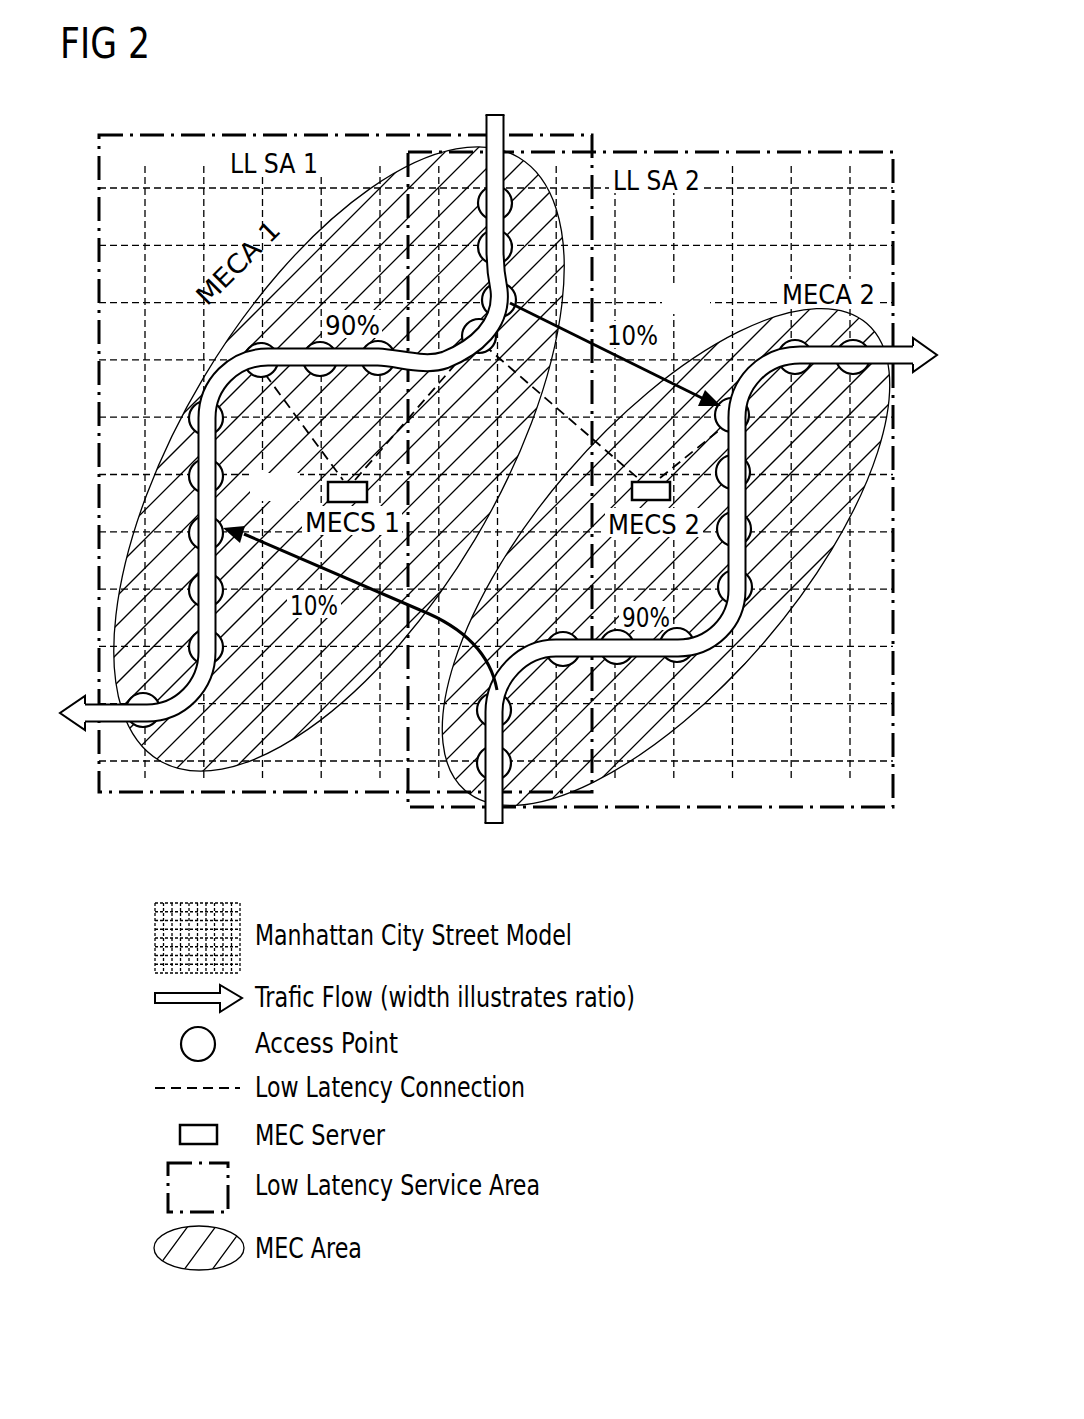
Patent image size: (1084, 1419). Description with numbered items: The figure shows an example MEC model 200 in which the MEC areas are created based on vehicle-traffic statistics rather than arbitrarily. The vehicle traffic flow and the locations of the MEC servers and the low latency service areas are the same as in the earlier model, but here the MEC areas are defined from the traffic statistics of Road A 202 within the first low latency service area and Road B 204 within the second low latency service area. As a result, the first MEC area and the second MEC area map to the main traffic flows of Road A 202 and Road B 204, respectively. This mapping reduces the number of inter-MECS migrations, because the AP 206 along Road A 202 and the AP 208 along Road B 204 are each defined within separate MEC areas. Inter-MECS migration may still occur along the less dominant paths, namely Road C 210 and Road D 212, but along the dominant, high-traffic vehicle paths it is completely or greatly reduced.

The model 200 is at (824, 106).
The Road A 202 is at (497, 114).
The Road B 204 is at (494, 826).
The AP 206 is at (208, 666).
The AP 208 is at (684, 664).
The Road C 210 is at (272, 548).
The Road D 212 is at (660, 377).